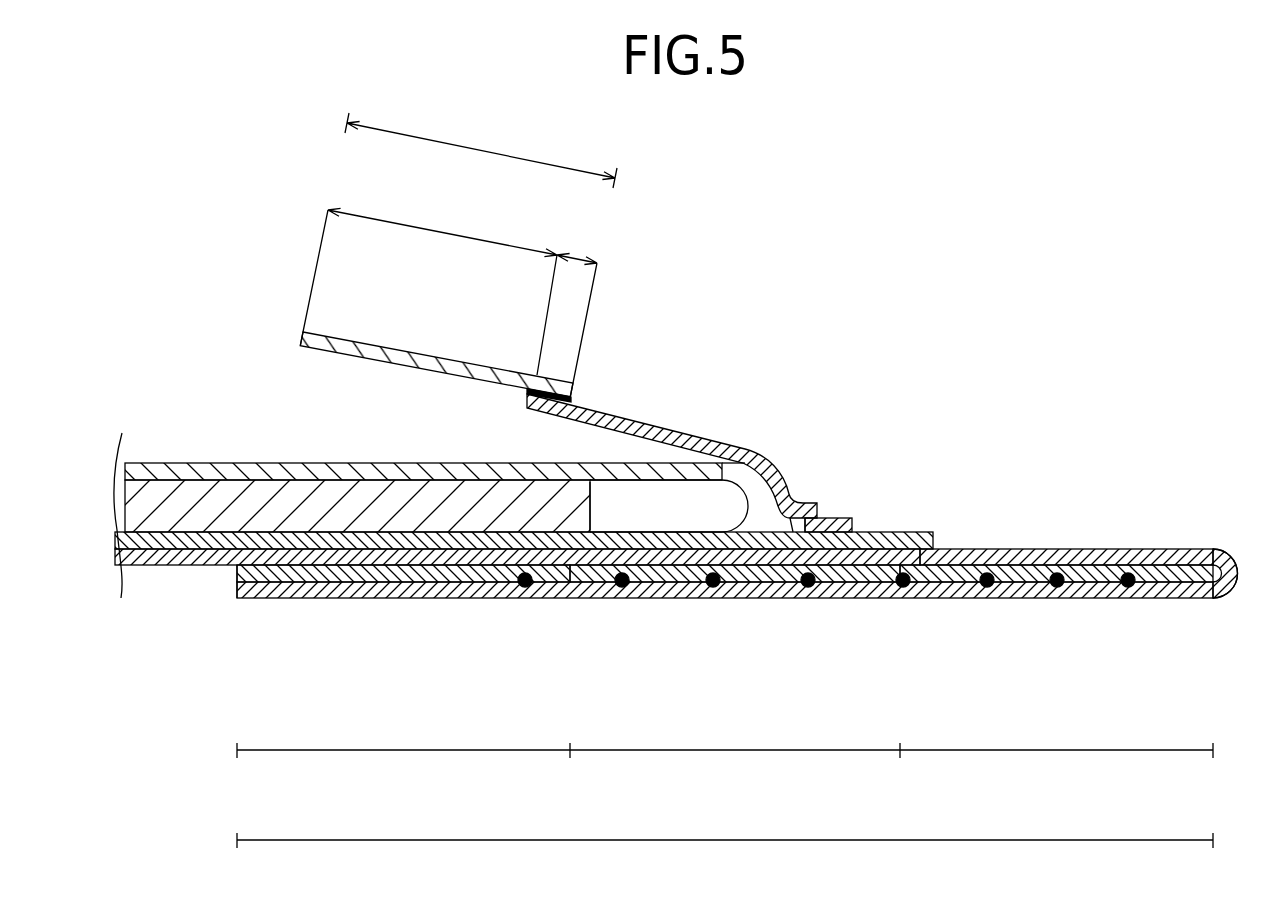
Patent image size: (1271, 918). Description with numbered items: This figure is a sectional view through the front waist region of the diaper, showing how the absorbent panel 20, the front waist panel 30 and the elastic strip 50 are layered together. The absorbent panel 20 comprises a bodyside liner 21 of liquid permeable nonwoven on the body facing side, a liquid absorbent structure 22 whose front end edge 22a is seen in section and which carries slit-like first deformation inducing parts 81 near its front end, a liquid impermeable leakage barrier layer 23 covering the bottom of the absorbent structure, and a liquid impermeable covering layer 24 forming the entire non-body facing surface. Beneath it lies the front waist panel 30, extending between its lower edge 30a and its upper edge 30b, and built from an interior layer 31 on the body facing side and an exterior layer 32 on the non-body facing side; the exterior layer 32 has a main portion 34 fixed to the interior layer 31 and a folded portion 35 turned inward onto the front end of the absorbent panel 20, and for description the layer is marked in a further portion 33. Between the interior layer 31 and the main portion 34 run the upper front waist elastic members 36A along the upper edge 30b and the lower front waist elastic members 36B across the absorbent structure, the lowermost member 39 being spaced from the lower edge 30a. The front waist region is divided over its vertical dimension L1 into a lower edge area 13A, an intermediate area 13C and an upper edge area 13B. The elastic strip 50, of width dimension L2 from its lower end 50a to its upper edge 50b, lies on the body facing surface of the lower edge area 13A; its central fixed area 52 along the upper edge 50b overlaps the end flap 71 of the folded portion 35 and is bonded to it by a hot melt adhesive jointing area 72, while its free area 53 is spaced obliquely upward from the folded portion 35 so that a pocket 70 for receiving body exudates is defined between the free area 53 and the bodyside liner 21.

The lower edge area 13A is at (403, 750).
The upper edge area 13B is at (1028, 750).
The intermediate area 13C is at (738, 750).
The absorbent panel 20 is at (524, 512).
The bodyside liner 21 is at (160, 463).
The liquid absorbent structure 22 is at (175, 507).
The front end edge of liquid absorbent structure 22a is at (781, 505).
The leakage barrier layer 23 is at (822, 518).
The covering layer 24 is at (595, 560).
The front waist panel 30 is at (729, 596).
The lower edge 30a is at (237, 585).
The upper edge 30b is at (1225, 568).
The interior layer 31 is at (1195, 592).
The exterior layer 32 is at (725, 596).
The first portion of core layer 33 is at (382, 590).
The main portion 34 is at (928, 595).
The folded portion 35 is at (1077, 549).
The upper front waist elastic members 36A is at (987, 588).
The lower front waist elastic members 36B is at (623, 588).
The lowermost front waist elastic member 39 is at (525, 590).
The elastic strip 50 is at (435, 352).
The first end of flap plate 50a is at (303, 336).
The upper edge of elastic strip 50b is at (570, 393).
The central fixed area 52 is at (588, 262).
The free area 53 is at (446, 232).
The pocket 70 is at (497, 315).
The end flap 71 is at (658, 428).
The jointing area 72 is at (552, 388).
The first deformation inducing parts 81 is at (698, 510).
The dimension of front waist region L1 is at (690, 840).
The width dimension of elastic strip L2 is at (480, 147).